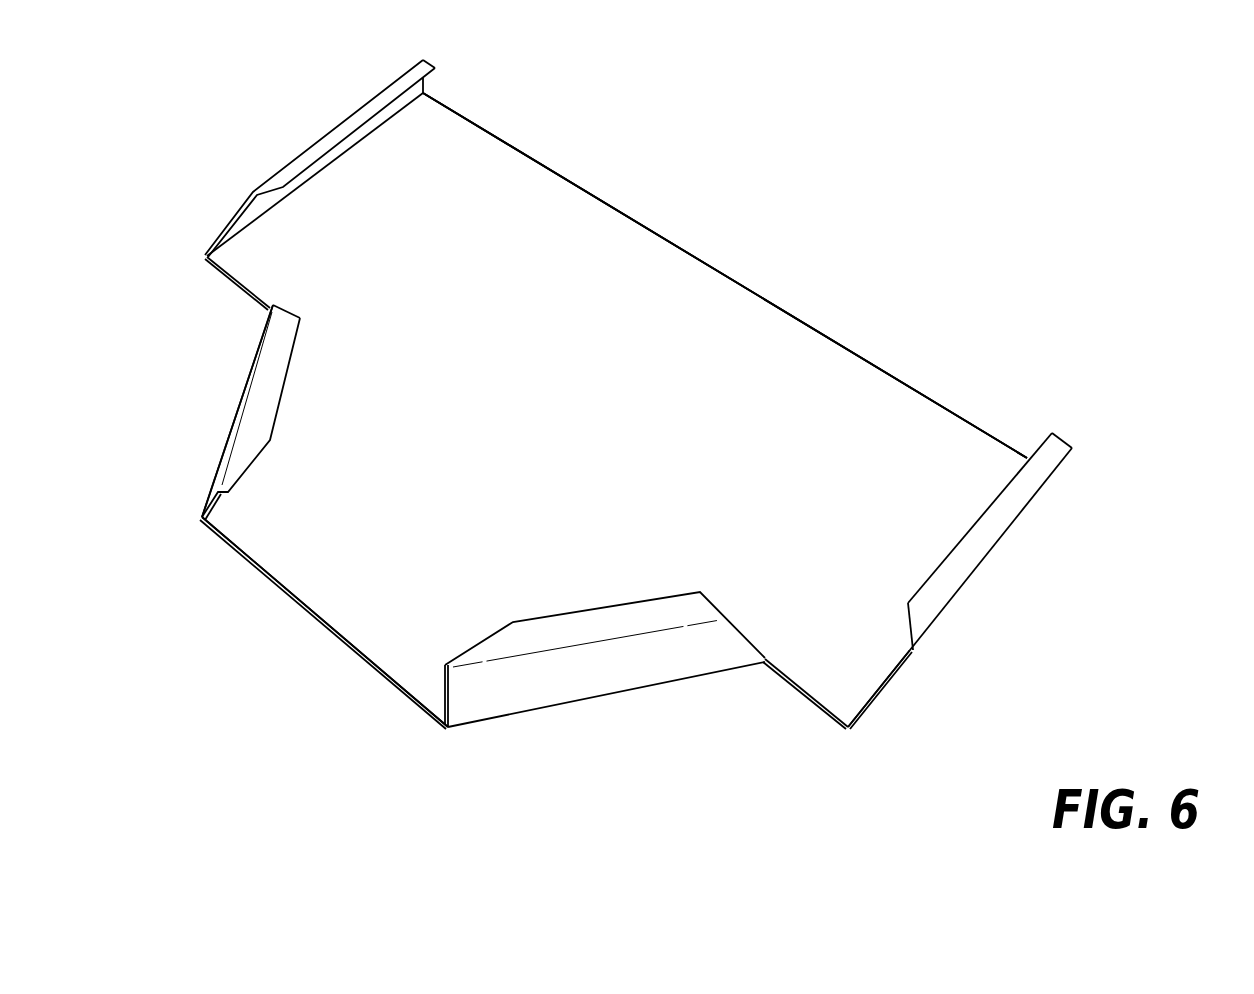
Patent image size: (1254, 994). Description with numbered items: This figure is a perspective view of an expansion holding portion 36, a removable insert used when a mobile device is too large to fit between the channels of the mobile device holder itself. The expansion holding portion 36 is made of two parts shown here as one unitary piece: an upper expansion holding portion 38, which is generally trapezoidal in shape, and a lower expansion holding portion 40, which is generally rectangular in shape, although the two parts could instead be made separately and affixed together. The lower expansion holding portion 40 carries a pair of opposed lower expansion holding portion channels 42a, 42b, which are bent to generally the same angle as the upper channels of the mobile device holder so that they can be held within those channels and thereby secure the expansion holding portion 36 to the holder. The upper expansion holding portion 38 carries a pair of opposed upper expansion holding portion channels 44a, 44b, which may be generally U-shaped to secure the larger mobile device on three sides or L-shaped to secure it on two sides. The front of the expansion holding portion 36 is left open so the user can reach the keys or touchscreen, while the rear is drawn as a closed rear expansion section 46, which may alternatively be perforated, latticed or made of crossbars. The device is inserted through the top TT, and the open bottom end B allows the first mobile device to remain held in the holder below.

The expansion holding portion 36 is at (669, 711).
The upper expansion holding portion 38 is at (892, 648).
The lower expansion holding portion 40 is at (245, 378).
The lower expansion holding portion channel 42a is at (265, 477).
The lower expansion holding portion channel 42b is at (493, 702).
The upper expansion holding portion channel 44a is at (432, 63).
The upper expansion holding portion channel 44b is at (1047, 432).
The closed rear expansion section 46 is at (605, 222).
The top of the expansion holding portion TT is at (686, 250).
The open bottom end B is at (306, 590).